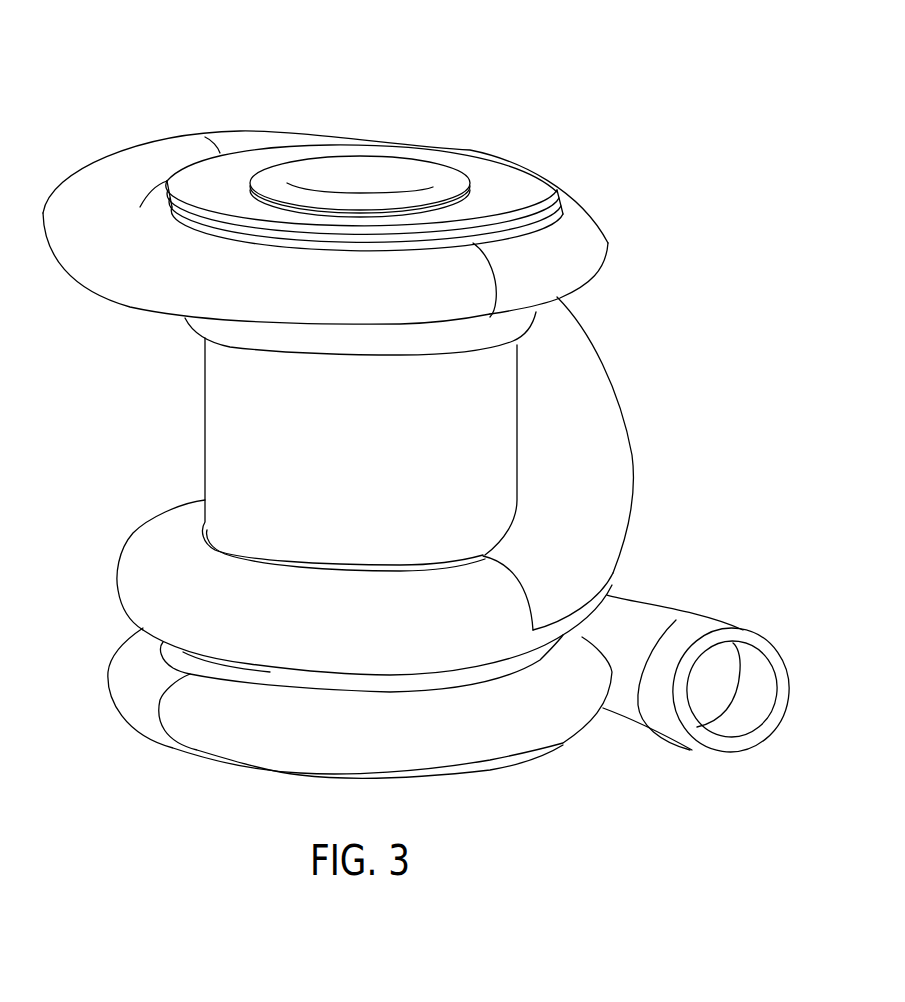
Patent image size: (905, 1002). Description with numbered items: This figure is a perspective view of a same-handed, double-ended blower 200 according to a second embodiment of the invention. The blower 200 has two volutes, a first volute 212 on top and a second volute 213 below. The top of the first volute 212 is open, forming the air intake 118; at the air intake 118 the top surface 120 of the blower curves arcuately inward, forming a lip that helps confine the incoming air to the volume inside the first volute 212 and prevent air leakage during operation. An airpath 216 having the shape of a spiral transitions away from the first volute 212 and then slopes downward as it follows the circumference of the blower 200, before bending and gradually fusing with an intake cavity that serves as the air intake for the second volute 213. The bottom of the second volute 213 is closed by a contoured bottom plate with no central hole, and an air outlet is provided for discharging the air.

The blower 200 is at (198, 93).
The air intake 118 is at (367, 182).
The first volute 212 is at (118, 265).
The airpath 216 is at (585, 413).
The second volute 213 is at (140, 697).
The top surface 120 is at (737, 717).